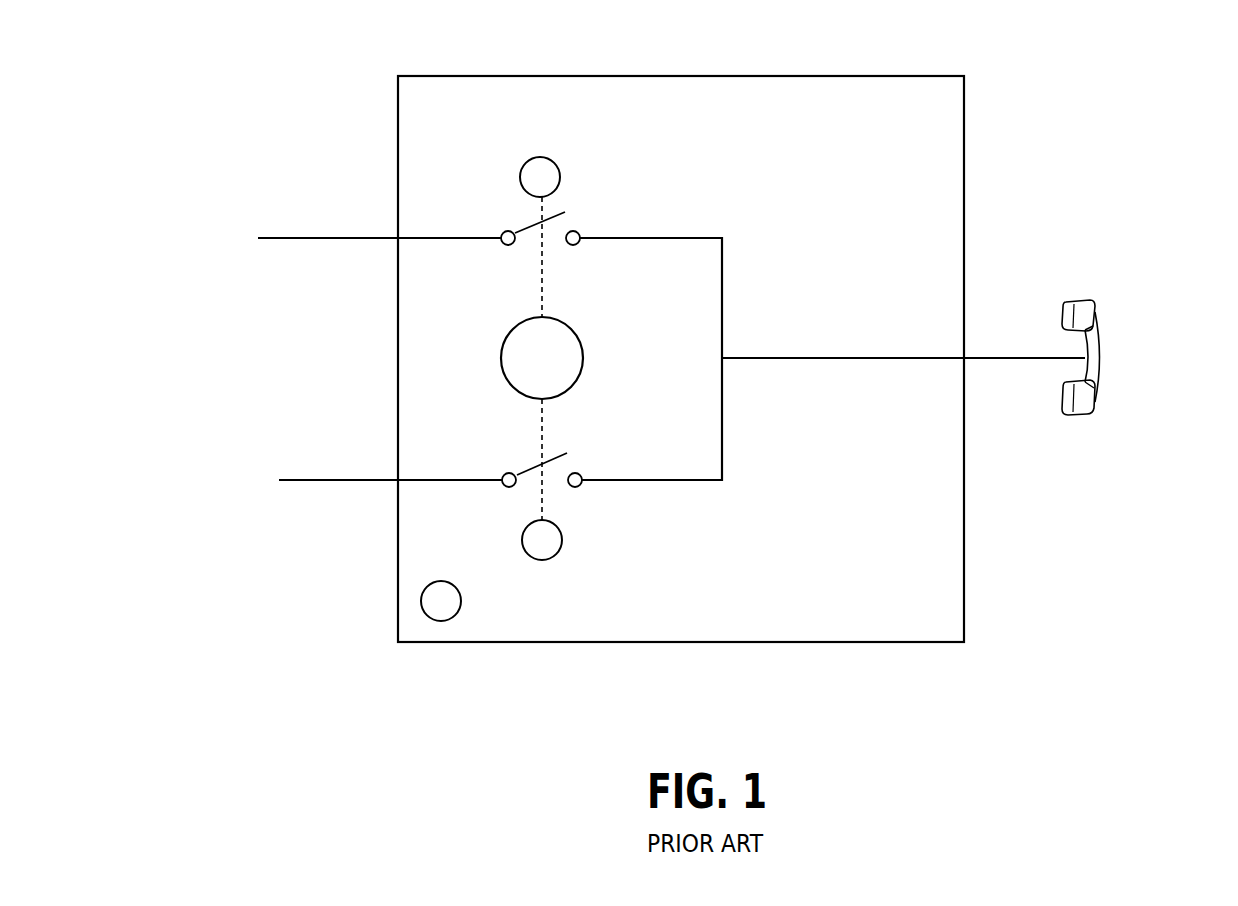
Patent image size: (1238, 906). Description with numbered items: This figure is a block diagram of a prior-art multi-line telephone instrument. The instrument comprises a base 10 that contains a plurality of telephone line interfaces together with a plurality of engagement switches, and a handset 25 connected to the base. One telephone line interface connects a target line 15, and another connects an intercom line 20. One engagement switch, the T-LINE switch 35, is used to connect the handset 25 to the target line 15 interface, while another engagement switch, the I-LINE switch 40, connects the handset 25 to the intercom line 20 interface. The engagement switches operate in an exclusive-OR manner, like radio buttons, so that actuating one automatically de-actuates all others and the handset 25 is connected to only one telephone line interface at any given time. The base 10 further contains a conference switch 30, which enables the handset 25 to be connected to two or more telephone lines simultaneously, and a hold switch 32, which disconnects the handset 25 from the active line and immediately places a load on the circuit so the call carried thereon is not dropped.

The base 10 is at (780, 75).
The target line 15 is at (288, 238).
The intercom line 20 is at (308, 480).
The handset 25 is at (1097, 308).
The conference switch 30 is at (583, 358).
The hold switch 32 is at (461, 601).
The T-LINE switch 35 is at (560, 177).
The I-LINE switch 40 is at (562, 540).